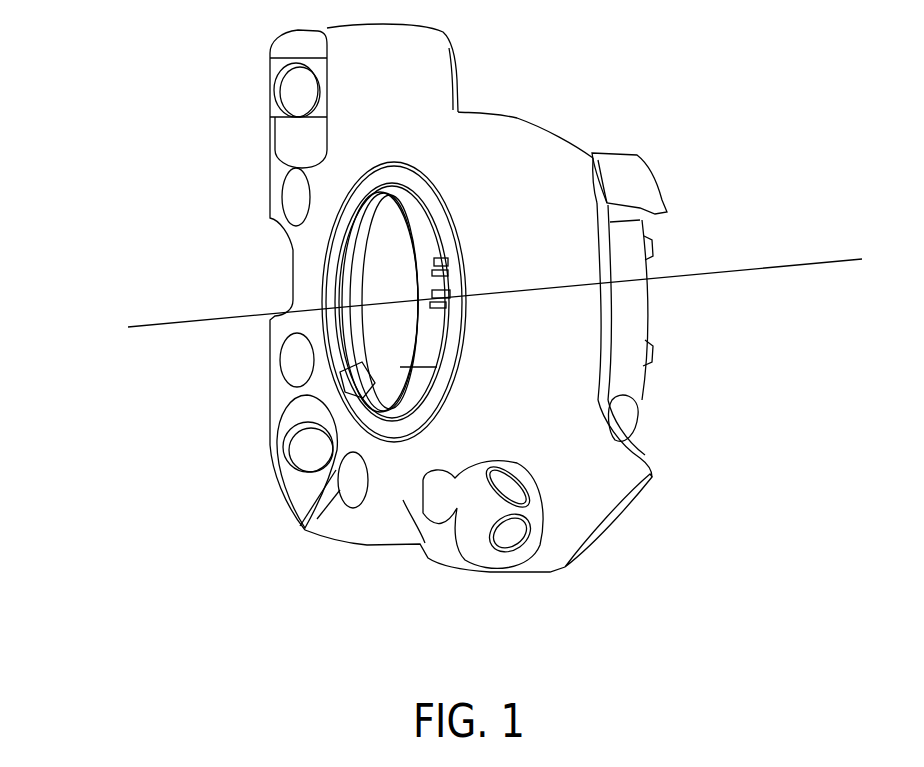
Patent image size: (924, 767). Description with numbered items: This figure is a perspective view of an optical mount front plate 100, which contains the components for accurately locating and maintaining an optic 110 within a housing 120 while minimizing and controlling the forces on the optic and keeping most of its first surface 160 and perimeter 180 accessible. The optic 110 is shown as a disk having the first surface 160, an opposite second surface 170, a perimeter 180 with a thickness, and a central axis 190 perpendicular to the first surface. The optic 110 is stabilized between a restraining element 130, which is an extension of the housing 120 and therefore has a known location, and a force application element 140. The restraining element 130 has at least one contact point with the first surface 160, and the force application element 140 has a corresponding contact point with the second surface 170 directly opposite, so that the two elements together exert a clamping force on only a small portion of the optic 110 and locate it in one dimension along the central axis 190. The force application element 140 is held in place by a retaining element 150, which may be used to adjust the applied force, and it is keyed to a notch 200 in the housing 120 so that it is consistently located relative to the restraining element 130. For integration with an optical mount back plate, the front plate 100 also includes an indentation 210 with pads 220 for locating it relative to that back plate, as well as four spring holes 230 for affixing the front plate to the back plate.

The optical mount front plate 100 is at (568, 180).
The optic 110 is at (627, 305).
The housing 120 is at (556, 399).
The restraining element 130 is at (638, 210).
The force application element 140 is at (407, 247).
The retaining element 150 is at (428, 200).
The first surface 160 is at (646, 246).
The second surface 170 is at (428, 278).
The perimeter 180 is at (645, 352).
The central axis 190 is at (162, 322).
The notch 200 is at (350, 394).
The indentation 210 is at (300, 489).
The pads 220 is at (308, 450).
The spring holes 230 is at (360, 481).